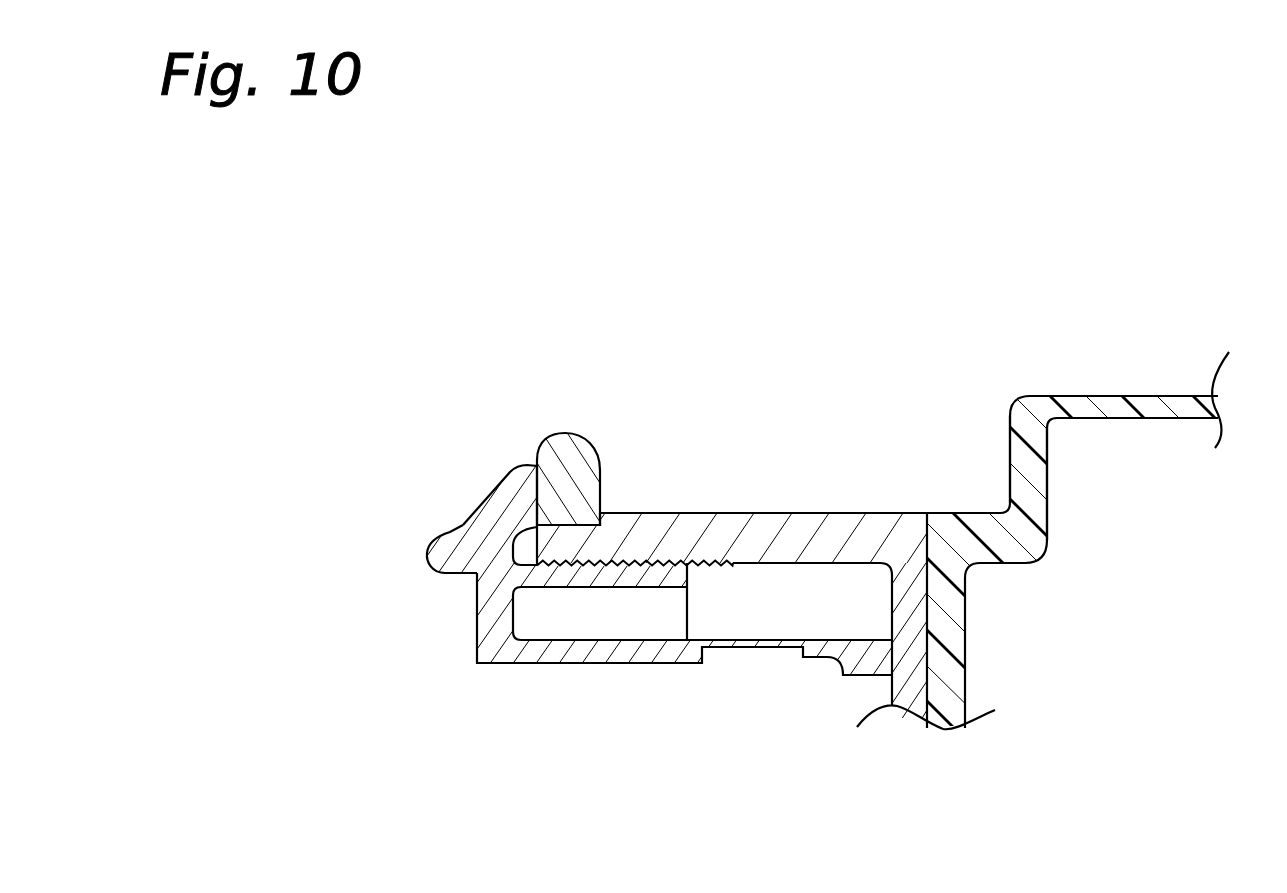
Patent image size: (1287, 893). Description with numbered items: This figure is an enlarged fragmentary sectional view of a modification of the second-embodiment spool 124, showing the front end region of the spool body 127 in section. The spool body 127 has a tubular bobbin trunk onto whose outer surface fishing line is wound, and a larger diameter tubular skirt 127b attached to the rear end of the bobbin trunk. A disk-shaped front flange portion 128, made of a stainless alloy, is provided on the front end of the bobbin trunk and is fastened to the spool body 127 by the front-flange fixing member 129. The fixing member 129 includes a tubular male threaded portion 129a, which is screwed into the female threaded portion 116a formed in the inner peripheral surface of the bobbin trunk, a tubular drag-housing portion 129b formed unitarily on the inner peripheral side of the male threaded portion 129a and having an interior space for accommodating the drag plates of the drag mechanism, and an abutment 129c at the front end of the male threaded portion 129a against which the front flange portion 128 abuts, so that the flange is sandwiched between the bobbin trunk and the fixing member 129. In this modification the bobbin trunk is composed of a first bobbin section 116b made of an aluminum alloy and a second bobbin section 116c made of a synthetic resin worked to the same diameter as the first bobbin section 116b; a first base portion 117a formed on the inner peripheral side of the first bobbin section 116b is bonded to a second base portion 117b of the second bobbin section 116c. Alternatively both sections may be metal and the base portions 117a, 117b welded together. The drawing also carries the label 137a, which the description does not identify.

The spool 124 is at (772, 420).
The spool body 127 is at (822, 501).
The tubular skirt 127b is at (1147, 370).
The front flange portion 128 is at (567, 443).
The front-flange fixing member 129 is at (481, 485).
The male threaded portion 129a is at (556, 566).
The drag-housing portion 129b is at (625, 650).
The abutment 129c is at (455, 547).
The female threaded portion 116a is at (637, 575).
The first bobbin section 116b is at (668, 540).
The second bobbin section 116c is at (968, 530).
The first base portion 117a is at (910, 620).
The second base portion 117b is at (937, 652).
The joint portion 137a is at (918, 513).